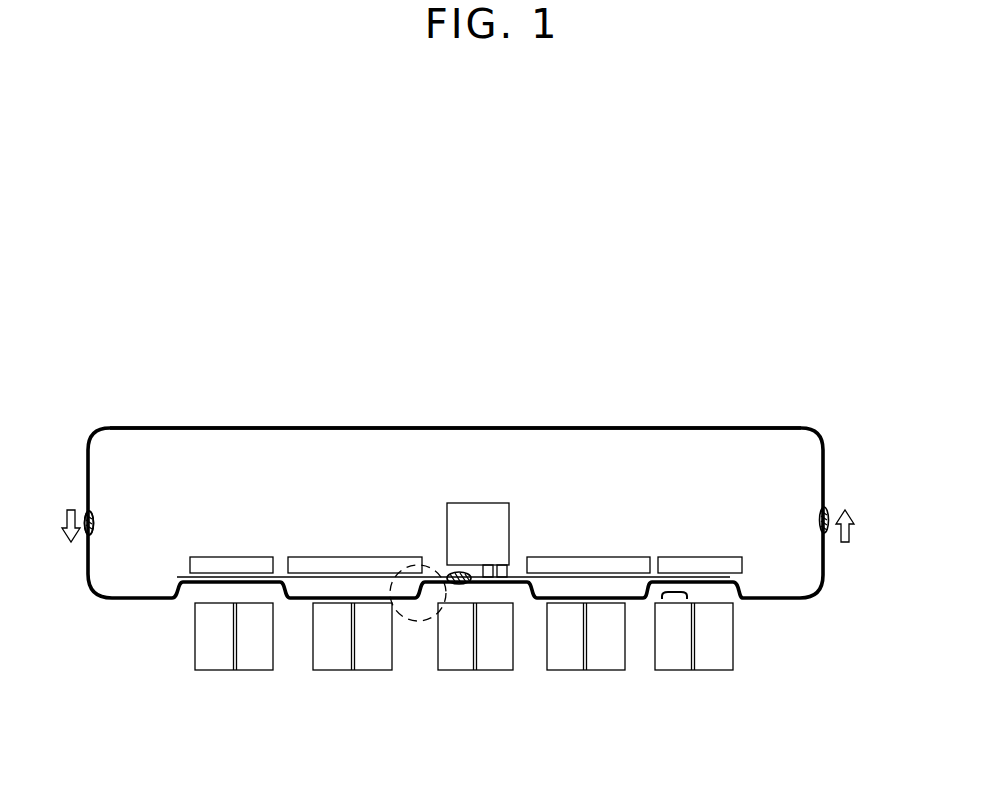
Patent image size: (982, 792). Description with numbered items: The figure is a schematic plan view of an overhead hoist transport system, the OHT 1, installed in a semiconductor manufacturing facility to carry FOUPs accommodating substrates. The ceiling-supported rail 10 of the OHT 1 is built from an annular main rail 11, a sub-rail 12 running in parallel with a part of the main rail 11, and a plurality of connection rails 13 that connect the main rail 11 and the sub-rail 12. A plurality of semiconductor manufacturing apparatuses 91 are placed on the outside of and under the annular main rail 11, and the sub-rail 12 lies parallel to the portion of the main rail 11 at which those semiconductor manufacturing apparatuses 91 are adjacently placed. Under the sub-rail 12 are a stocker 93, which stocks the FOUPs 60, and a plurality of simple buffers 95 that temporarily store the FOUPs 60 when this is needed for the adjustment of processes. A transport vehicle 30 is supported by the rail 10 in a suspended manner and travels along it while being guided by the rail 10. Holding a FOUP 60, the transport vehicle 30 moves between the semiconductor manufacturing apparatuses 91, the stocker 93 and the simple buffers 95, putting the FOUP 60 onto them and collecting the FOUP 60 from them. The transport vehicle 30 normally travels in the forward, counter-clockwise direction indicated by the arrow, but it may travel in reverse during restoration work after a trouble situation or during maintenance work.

The OHT 1 is at (850, 342).
The rail 10 is at (762, 427).
The main rail 11 is at (243, 427).
The sub-rail 12 is at (218, 580).
The connection rail 13 is at (427, 600).
The transport vehicle 30 is at (86, 515).
The FOUP 60 is at (96, 521).
The semiconductor manufacturing apparatus 91 is at (332, 658).
The stocker 93 is at (478, 513).
The simple buffer 95 is at (322, 567).